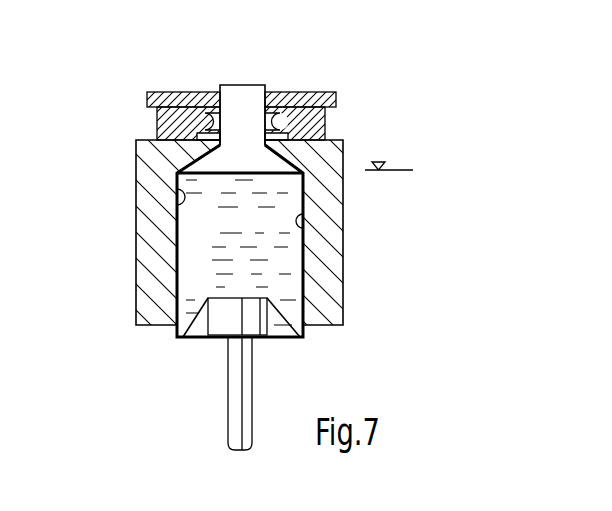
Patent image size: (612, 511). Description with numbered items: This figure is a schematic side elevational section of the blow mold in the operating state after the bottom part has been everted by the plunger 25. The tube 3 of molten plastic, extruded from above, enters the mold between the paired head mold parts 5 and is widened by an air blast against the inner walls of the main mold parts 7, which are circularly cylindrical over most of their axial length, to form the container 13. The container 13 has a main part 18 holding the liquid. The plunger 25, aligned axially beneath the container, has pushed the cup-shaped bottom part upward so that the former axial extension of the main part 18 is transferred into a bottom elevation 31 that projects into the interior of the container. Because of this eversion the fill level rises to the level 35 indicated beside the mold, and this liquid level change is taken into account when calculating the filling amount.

The tube 3 is at (221, 102).
The head mold parts 5 is at (167, 128).
The main mold parts 7 is at (155, 250).
The container 13 is at (168, 222).
The main part 18 is at (307, 243).
The plunger 25 is at (228, 325).
The bottom elevation 31 is at (270, 303).
The level 35 is at (397, 170).